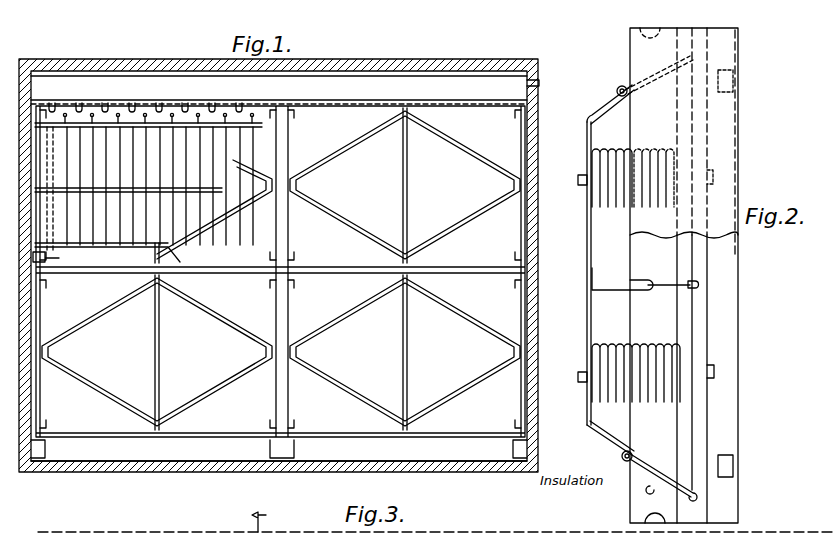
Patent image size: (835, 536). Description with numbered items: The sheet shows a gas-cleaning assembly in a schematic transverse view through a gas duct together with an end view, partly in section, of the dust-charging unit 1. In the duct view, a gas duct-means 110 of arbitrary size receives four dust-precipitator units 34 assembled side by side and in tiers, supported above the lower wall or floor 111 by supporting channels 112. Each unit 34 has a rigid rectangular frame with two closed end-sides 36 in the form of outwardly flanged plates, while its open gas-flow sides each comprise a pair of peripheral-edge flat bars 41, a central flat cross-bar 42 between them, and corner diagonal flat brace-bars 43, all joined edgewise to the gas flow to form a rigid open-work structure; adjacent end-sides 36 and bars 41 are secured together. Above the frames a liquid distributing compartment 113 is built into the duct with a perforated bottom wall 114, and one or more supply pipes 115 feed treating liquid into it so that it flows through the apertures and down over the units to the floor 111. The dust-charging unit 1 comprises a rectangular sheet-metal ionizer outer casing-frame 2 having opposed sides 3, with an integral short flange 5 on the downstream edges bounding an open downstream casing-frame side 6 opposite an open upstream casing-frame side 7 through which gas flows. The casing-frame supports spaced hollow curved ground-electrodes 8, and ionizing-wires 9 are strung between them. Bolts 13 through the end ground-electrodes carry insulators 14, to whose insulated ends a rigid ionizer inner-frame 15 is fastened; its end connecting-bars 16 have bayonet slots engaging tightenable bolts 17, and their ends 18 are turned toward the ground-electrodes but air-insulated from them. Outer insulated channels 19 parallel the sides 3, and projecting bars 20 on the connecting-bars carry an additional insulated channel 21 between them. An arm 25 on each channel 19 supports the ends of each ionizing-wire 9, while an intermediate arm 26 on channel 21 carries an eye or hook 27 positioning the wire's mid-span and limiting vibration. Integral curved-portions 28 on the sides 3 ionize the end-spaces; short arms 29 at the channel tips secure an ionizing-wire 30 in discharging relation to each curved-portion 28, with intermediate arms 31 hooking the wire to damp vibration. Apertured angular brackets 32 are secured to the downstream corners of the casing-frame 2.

In FIG. 1, the dust-charging unit 1 is at (206, 198).
In FIG. 2, the dust-charging unit 1 is at (656, 322).
In FIG. 3, the dust-charging unit 1 is at (193, 522).
In FIG. 2, the ionizer outer casing-frame 2 is at (739, 136).
In FIG. 3, the ionizer outer casing-frame 2 is at (526, 532).
In FIG. 2, the casing-frame side 3 is at (715, 520).
In FIG. 3, the casing-frame side 3 is at (490, 532).
In FIG. 2, the flange 5 is at (740, 520).
In FIG. 3, the flange 5 is at (446, 532).
In FIG. 2, the downstream casing-frame side 6 is at (740, 311).
In FIG. 2, the upstream casing-frame side 7 is at (630, 304).
In FIG. 1, the ground-electrode 8 is at (190, 216).
In FIG. 2, the ground-electrode 8 is at (709, 415).
In FIG. 3, the ground-electrode 8 is at (123, 532).
In FIG. 1, the ionizing-wire 9 is at (150, 138).
In FIG. 2, the ionizing-wire 9 is at (694, 395).
In FIG. 2, the bolt 13 is at (716, 178).
In FIG. 2, the insulator 14 is at (604, 150).
In FIG. 1, the ionizer inner-frame 15 is at (60, 259).
In FIG. 2, the ionizer inner-frame 15 is at (592, 233).
In FIG. 2, the connecting-bar 16 is at (587, 314).
In FIG. 2, the tightenable bolt 17 is at (578, 181).
In FIG. 2, the connecting-bar end 18 is at (606, 108).
In FIG. 1, the outer insulated channel 19 is at (258, 128).
In FIG. 2, the outer insulated channel 19 is at (621, 86).
In FIG. 1, the projecting bar 20 is at (222, 190).
In FIG. 2, the projecting bar 20 is at (604, 286).
In FIG. 2, the insulated channel 21 is at (644, 280).
In FIG. 2, the arm 25 is at (657, 475).
In FIG. 2, the intermediate arm 26 is at (664, 282).
In FIG. 2, the eye or hook 27 is at (698, 285).
In FIG. 2, the curved-portion 28 is at (646, 518).
In FIG. 2, the short arm 29 is at (652, 66).
In FIG. 2, the ionizing-wire 30 is at (663, 71).
In FIG. 2, the intermediate arm 31 is at (654, 490).
In FIG. 2, the angular bracket 32 is at (735, 79).
In FIG. 3, the angular bracket 32 is at (72, 522).
In FIG. 1, the dust-precipitator unit 34 is at (241, 249).
In FIG. 1, the end-side 36 is at (289, 316).
In FIG. 1, the peripheral-edge flat bar 41 is at (341, 264).
In FIG. 1, the central flat cross-bar 42 is at (163, 249).
In FIG. 1, the corner diagonal flat brace-bar 43 is at (244, 209).
In FIG. 1, the gas duct-means 110 is at (528, 243).
In FIG. 1, the lower wall or floor 111 is at (375, 463).
In FIG. 1, the supporting channel 112 is at (44, 451).
In FIG. 1, the compartment 113 is at (293, 74).
In FIG. 1, the perforated bottom wall 114 is at (388, 98).
In FIG. 1, the supply pipe 115 is at (540, 83).